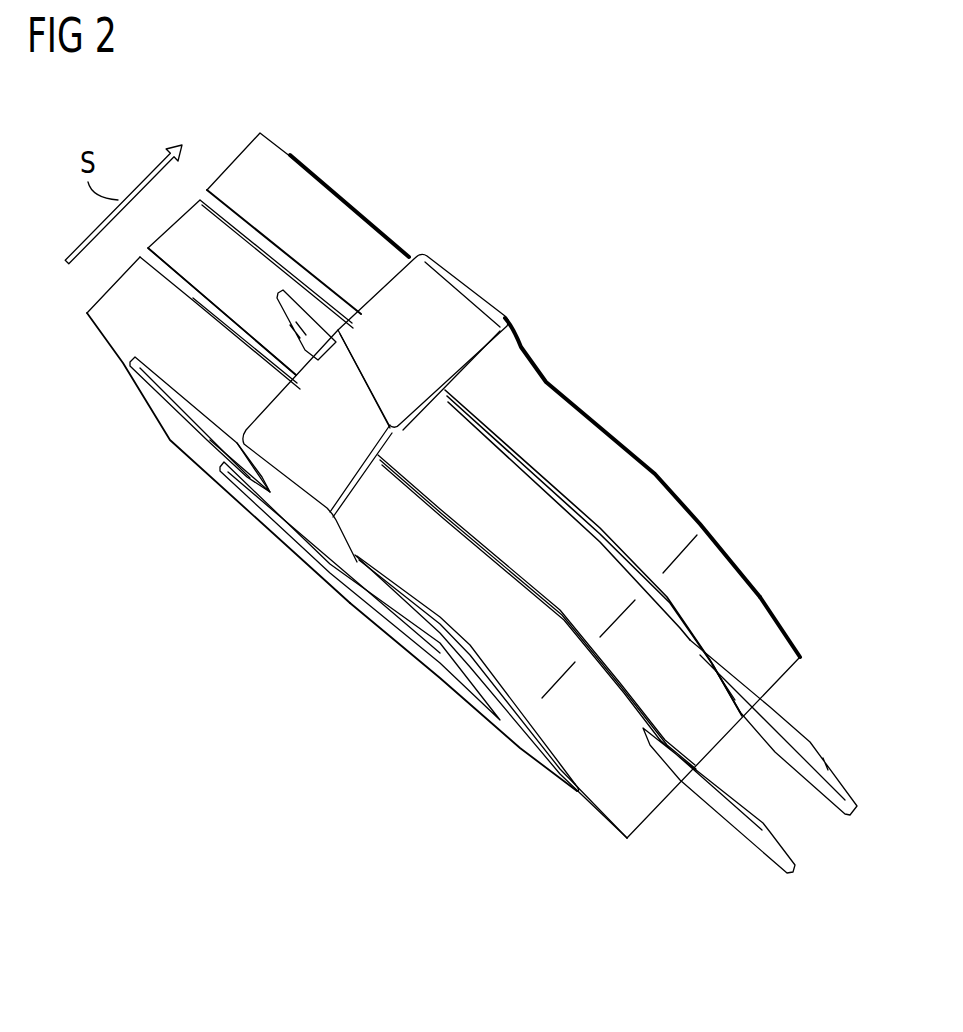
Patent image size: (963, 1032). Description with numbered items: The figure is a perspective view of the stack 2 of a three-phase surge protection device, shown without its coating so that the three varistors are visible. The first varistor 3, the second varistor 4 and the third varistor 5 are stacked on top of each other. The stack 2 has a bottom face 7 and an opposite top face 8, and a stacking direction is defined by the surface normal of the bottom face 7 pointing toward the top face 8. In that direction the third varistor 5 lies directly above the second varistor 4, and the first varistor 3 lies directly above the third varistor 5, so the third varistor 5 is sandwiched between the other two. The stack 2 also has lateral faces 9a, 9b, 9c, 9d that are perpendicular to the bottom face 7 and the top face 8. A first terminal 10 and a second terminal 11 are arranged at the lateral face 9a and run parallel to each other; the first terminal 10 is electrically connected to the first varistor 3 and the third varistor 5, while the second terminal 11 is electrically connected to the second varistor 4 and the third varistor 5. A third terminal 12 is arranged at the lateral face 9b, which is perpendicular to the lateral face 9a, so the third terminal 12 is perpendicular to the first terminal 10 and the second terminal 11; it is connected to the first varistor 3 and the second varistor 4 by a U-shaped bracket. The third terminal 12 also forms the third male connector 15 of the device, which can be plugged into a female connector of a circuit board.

The stack 2 is at (598, 377).
The first varistor 3 is at (760, 630).
The second varistor 4 is at (430, 583).
The third varistor 5 is at (198, 222).
The bottom face 7 is at (110, 337).
The top face 8 is at (655, 470).
The lateral face 9a is at (608, 760).
The lateral face 9b is at (207, 373).
The lateral face 9c is at (103, 291).
The lateral face 9d is at (733, 698).
The first terminal 10 is at (810, 772).
The second terminal 11 is at (728, 823).
The third terminal 12 is at (394, 404).
The third male connector 15 is at (345, 350).